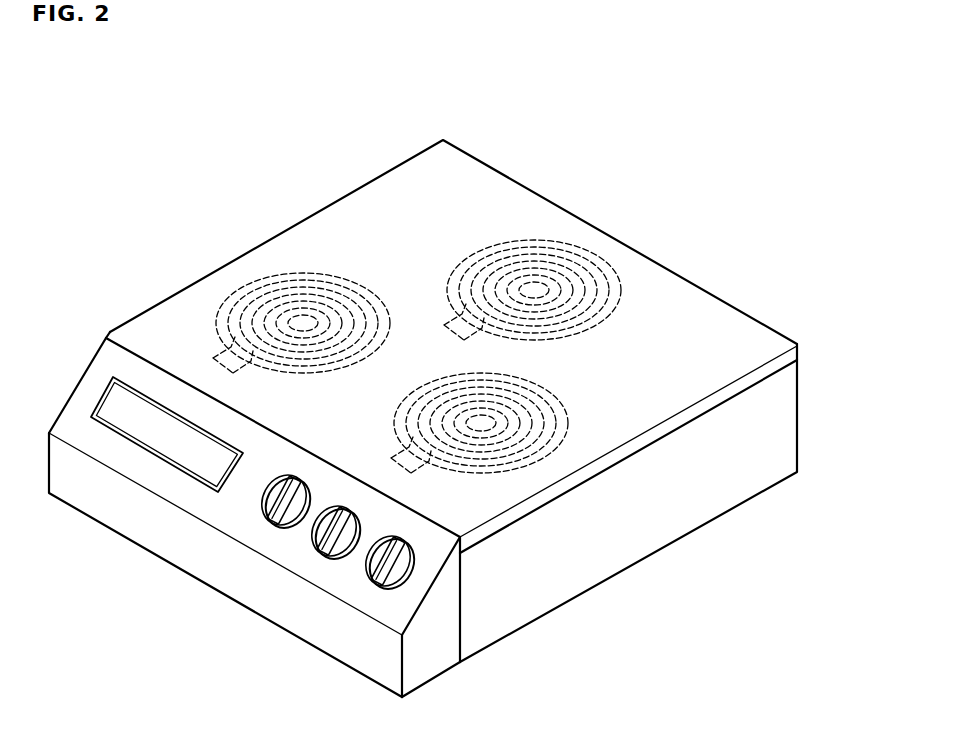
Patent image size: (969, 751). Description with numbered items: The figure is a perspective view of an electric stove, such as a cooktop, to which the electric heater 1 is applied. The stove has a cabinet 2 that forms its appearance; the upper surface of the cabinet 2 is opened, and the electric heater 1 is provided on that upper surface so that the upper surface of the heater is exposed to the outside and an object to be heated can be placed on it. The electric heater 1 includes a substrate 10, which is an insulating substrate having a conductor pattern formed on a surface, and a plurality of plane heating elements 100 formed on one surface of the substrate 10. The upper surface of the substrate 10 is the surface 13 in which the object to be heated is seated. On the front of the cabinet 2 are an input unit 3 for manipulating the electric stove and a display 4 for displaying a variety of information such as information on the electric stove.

The electric heater 1 is at (265, 197).
The cabinet 2 is at (782, 426).
The input unit 3 is at (373, 582).
The display 4 is at (178, 443).
The substrate 10 is at (573, 212).
The surface in which the object to be heated is seated 13 is at (520, 208).
The plane heating element 100 is at (607, 257).